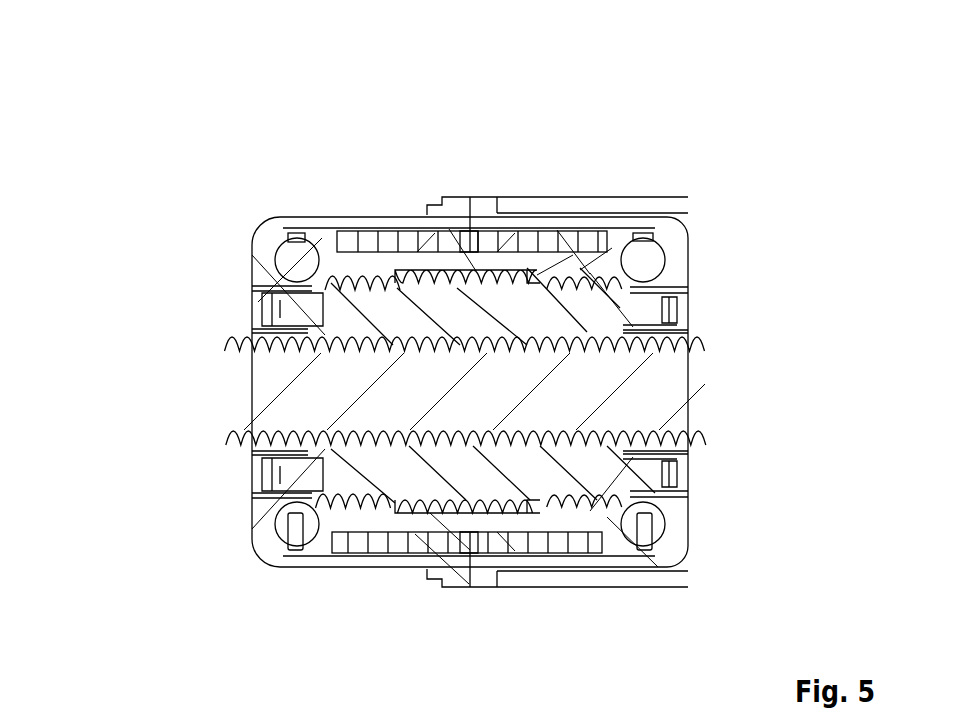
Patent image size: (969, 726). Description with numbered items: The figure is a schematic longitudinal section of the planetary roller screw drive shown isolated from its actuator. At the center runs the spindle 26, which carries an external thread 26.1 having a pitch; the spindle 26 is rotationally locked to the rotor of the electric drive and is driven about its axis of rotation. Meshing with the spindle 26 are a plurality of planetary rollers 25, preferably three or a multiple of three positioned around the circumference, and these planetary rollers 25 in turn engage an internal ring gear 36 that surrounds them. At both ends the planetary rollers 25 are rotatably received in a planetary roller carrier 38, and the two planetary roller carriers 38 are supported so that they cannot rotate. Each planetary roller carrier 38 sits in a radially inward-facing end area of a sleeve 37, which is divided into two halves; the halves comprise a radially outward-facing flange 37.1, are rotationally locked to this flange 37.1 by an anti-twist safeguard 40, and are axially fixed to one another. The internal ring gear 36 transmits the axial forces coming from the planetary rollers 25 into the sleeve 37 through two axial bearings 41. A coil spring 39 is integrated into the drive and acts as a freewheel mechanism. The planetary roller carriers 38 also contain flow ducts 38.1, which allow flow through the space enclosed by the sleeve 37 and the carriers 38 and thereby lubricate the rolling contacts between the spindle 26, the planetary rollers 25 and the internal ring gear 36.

The planetary rollers 25 is at (335, 476).
The spindle 26 is at (302, 407).
The external thread 26.1 is at (697, 436).
The internal ring gear 36 is at (387, 271).
The sleeve 37 is at (419, 222).
The flange 37.1 is at (462, 212).
The planetary roller carrier 38 is at (257, 311).
The flow ducts 38.1 is at (264, 339).
The coil spring 39 is at (525, 246).
The anti-twist safeguard 40 is at (614, 204).
The axial bearings 41 is at (297, 524).